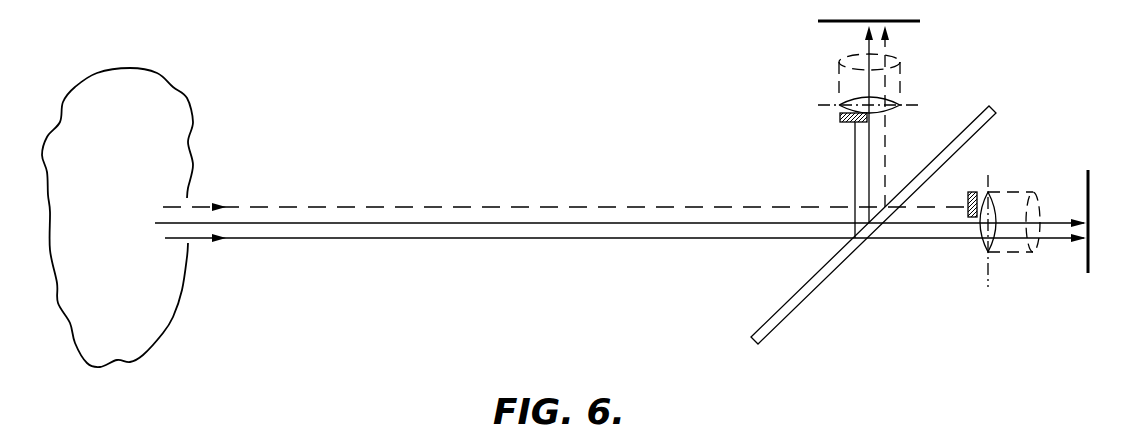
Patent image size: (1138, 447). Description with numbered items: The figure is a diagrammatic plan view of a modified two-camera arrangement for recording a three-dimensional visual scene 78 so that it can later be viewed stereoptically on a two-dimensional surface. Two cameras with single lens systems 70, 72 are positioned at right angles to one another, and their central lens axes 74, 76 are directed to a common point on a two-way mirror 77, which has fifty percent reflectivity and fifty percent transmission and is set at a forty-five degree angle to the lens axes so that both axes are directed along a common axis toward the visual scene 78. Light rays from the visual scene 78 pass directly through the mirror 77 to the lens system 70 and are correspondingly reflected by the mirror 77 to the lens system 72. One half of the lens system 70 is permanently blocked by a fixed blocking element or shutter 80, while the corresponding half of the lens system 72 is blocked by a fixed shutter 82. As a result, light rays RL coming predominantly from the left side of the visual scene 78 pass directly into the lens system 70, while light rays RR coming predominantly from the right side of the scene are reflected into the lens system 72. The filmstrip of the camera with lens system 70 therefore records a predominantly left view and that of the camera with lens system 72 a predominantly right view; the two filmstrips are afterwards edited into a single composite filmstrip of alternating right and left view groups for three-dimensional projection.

The camera lens system 70 is at (1007, 258).
The camera lens system 72 is at (913, 77).
The central lens axis 74 is at (905, 224).
The central lens axis 76 is at (870, 154).
The mirror 77 is at (995, 108).
The visual scene 78 is at (170, 99).
The fixed blocking element or shutter 80 is at (972, 192).
The fixed shutter 82 is at (840, 121).
The light rays from right side RR is at (550, 207).
The light rays from left side RL is at (533, 239).